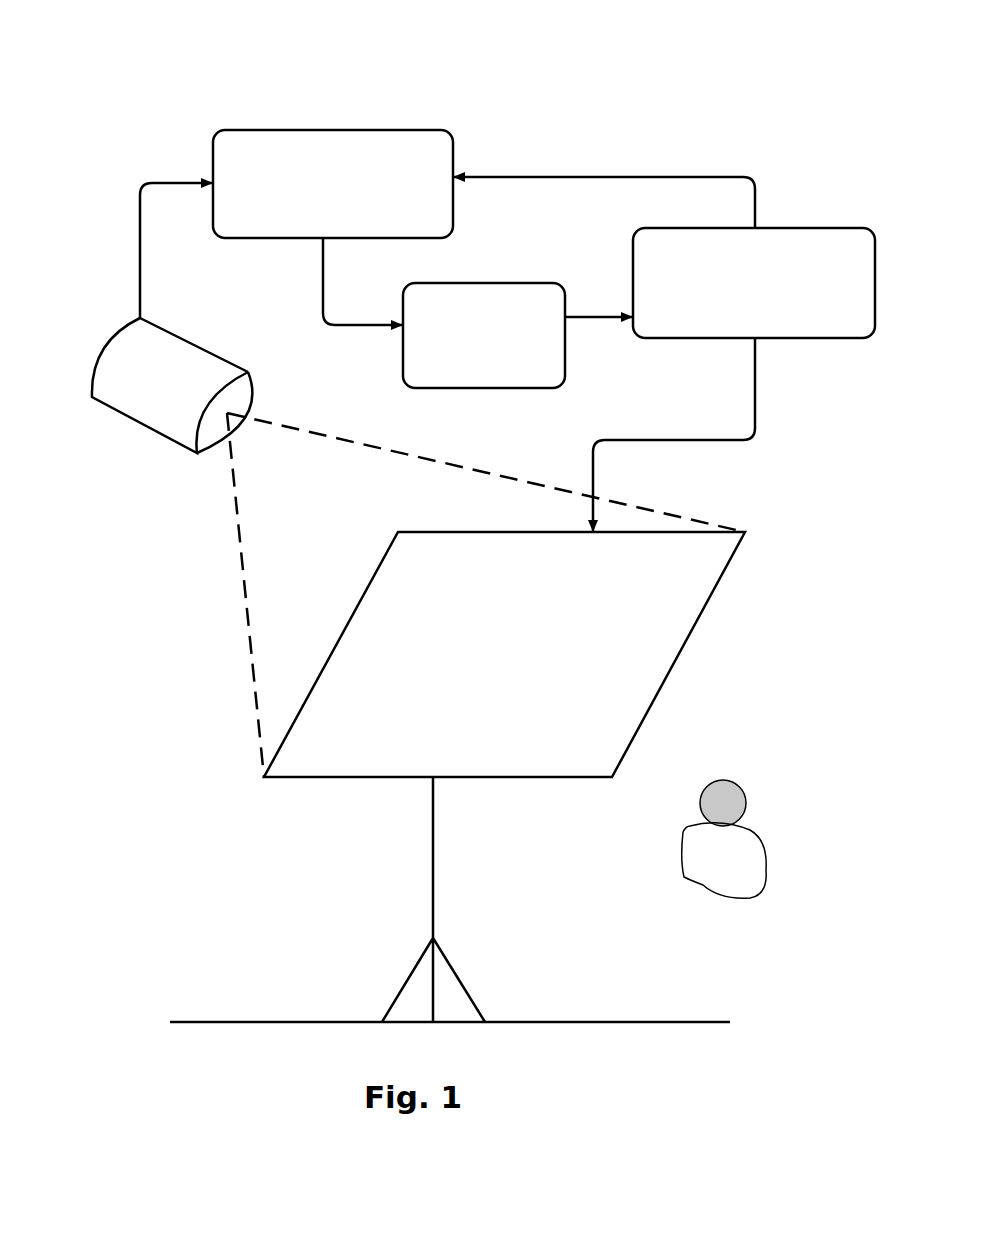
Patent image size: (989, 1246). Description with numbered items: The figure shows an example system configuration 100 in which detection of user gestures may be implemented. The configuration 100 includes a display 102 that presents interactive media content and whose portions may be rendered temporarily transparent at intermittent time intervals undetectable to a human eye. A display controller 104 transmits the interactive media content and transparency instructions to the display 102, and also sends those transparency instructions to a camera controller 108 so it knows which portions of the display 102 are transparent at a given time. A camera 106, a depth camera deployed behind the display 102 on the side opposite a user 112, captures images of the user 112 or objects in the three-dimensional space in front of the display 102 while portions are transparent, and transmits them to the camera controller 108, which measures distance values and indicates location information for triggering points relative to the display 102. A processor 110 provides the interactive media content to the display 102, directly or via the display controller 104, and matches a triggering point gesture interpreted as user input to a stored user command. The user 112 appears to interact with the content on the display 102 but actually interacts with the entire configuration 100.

The system configuration 100 is at (83, 37).
The display 102 is at (716, 589).
The display controller 104 is at (754, 283).
The camera 106 is at (92, 375).
The camera controller 108 is at (333, 184).
The processor 110 is at (484, 335).
The user 112 is at (693, 823).